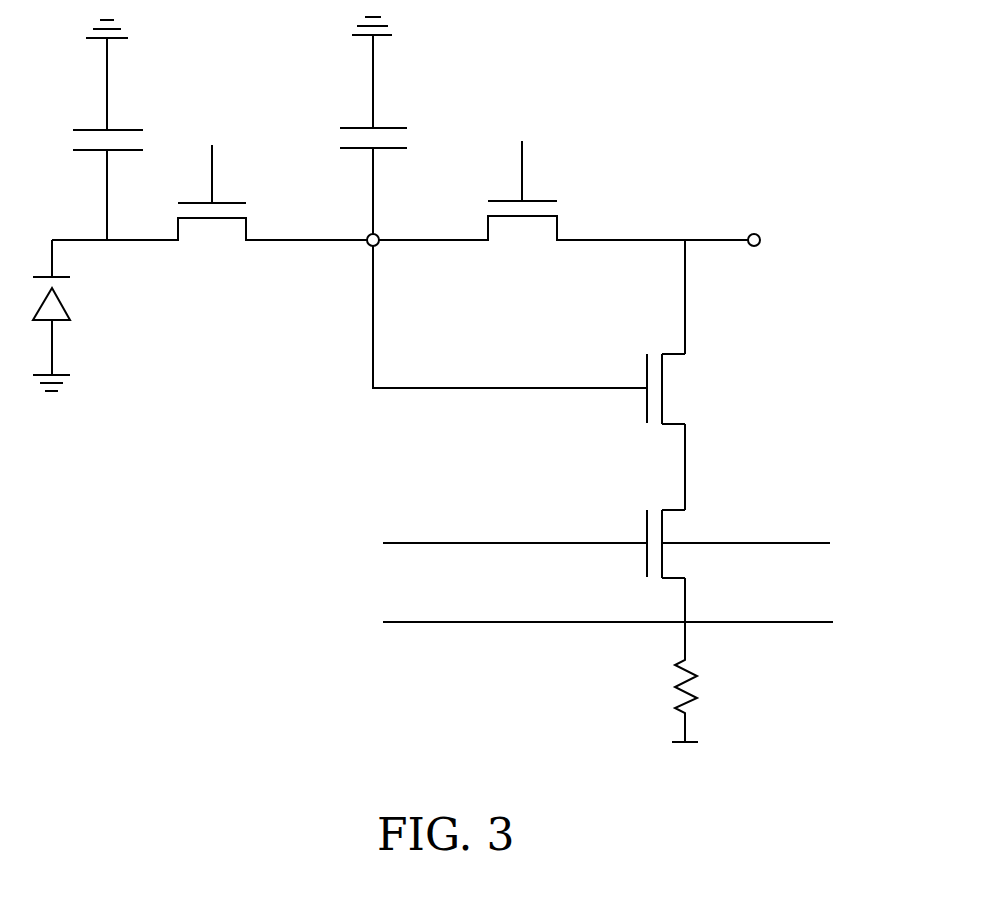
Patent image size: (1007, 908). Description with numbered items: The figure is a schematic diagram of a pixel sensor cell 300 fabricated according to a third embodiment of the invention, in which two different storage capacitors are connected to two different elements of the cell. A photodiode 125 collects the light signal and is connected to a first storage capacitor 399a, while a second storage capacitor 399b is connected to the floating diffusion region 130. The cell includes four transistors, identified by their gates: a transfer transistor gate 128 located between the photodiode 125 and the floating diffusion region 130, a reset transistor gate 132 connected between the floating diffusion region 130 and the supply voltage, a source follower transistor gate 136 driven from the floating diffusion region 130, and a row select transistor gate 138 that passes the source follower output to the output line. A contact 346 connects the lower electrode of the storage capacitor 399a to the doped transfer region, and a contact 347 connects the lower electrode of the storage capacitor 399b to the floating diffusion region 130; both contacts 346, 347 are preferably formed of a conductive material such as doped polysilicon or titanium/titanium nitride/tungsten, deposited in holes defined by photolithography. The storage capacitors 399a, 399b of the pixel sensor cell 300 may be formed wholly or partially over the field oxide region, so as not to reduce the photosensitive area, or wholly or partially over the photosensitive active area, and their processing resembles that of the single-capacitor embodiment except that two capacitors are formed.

The pixel sensor cell 300 is at (654, 92).
The storage capacitor 399a is at (152, 128).
The storage capacitor 399b is at (419, 128).
The contact 346 is at (107, 192).
The contact 347 is at (373, 190).
The transfer transistor gate 128 is at (229, 196).
The photodiode 125 is at (80, 299).
The floating diffusion region 130 is at (378, 246).
The reset transistor gate 132 is at (544, 192).
The source follower transistor gate 136 is at (641, 376).
The row select transistor gate 138 is at (641, 528).